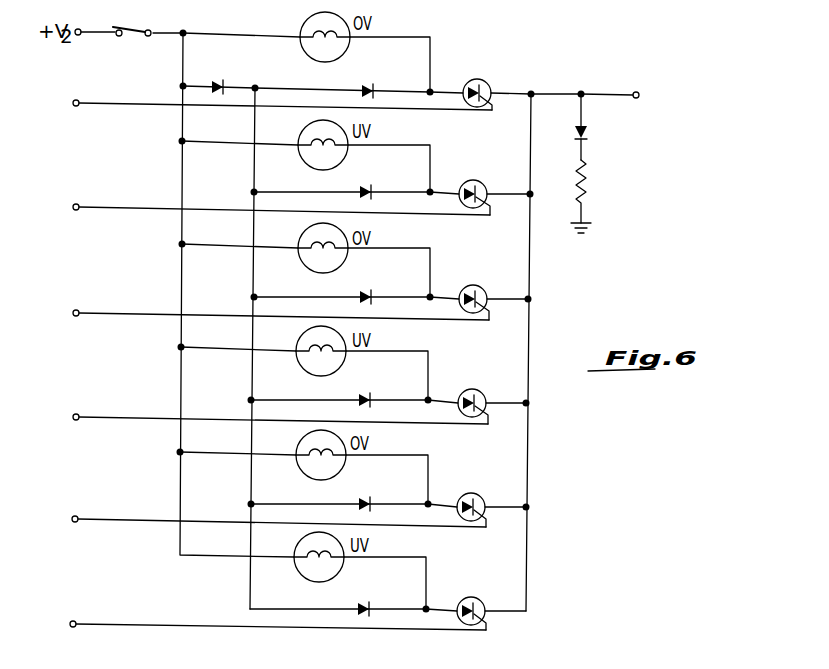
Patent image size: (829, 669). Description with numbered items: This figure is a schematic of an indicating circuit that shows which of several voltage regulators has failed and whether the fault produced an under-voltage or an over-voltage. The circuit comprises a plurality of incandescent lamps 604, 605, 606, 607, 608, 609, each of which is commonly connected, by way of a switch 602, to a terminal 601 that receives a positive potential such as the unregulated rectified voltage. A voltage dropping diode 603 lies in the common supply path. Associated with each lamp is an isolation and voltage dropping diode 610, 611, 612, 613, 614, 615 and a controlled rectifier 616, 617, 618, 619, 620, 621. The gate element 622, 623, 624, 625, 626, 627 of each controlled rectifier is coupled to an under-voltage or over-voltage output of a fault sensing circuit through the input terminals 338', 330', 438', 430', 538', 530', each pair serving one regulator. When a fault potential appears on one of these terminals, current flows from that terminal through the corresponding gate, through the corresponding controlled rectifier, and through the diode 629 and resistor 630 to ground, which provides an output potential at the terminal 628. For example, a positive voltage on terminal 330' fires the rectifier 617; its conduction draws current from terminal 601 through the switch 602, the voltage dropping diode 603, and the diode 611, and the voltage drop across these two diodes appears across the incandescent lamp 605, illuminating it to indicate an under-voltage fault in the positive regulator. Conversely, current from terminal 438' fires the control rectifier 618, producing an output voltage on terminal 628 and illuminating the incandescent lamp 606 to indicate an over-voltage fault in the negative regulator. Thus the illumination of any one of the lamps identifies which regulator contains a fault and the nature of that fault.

The terminal 601 is at (78, 36).
The switch 602 is at (142, 25).
The voltage dropping diode 603 is at (215, 79).
The incandescent lamp 604 is at (301, 30).
The incandescent lamp 605 is at (304, 162).
The incandescent lamp 606 is at (304, 265).
The incandescent lamp 607 is at (303, 368).
The incandescent lamp 608 is at (303, 473).
The incandescent lamp 609 is at (302, 575).
The isolation and voltage dropping diode 610 is at (374, 86).
The isolation and voltage dropping diode 611 is at (371, 189).
The isolation and voltage dropping diode 612 is at (371, 293).
The isolation and voltage dropping diode 613 is at (371, 397).
The isolation and voltage dropping diode 614 is at (371, 501).
The isolation and voltage dropping diode 615 is at (371, 601).
The controlled rectifier 616 is at (470, 80).
The controlled rectifier 617 is at (466, 182).
The controlled rectifier 618 is at (465, 288).
The controlled rectifier 619 is at (464, 392).
The controlled rectifier 620 is at (464, 495).
The controlled rectifier 621 is at (464, 599).
The gate element 622 is at (488, 91).
The gate element 623 is at (485, 190).
The gate element 624 is at (484, 295).
The gate element 625 is at (483, 399).
The gate element 626 is at (483, 499).
The gate element 627 is at (483, 603).
The terminal 628 is at (640, 96).
The diode 629 is at (590, 133).
The resistor 630 is at (590, 185).
The terminal 338' is at (272, 122).
The terminal 330' is at (270, 226).
The terminal 438' is at (270, 334).
The terminal 430' is at (269, 438).
The terminal 538' is at (267, 535).
The terminal 530' is at (267, 640).